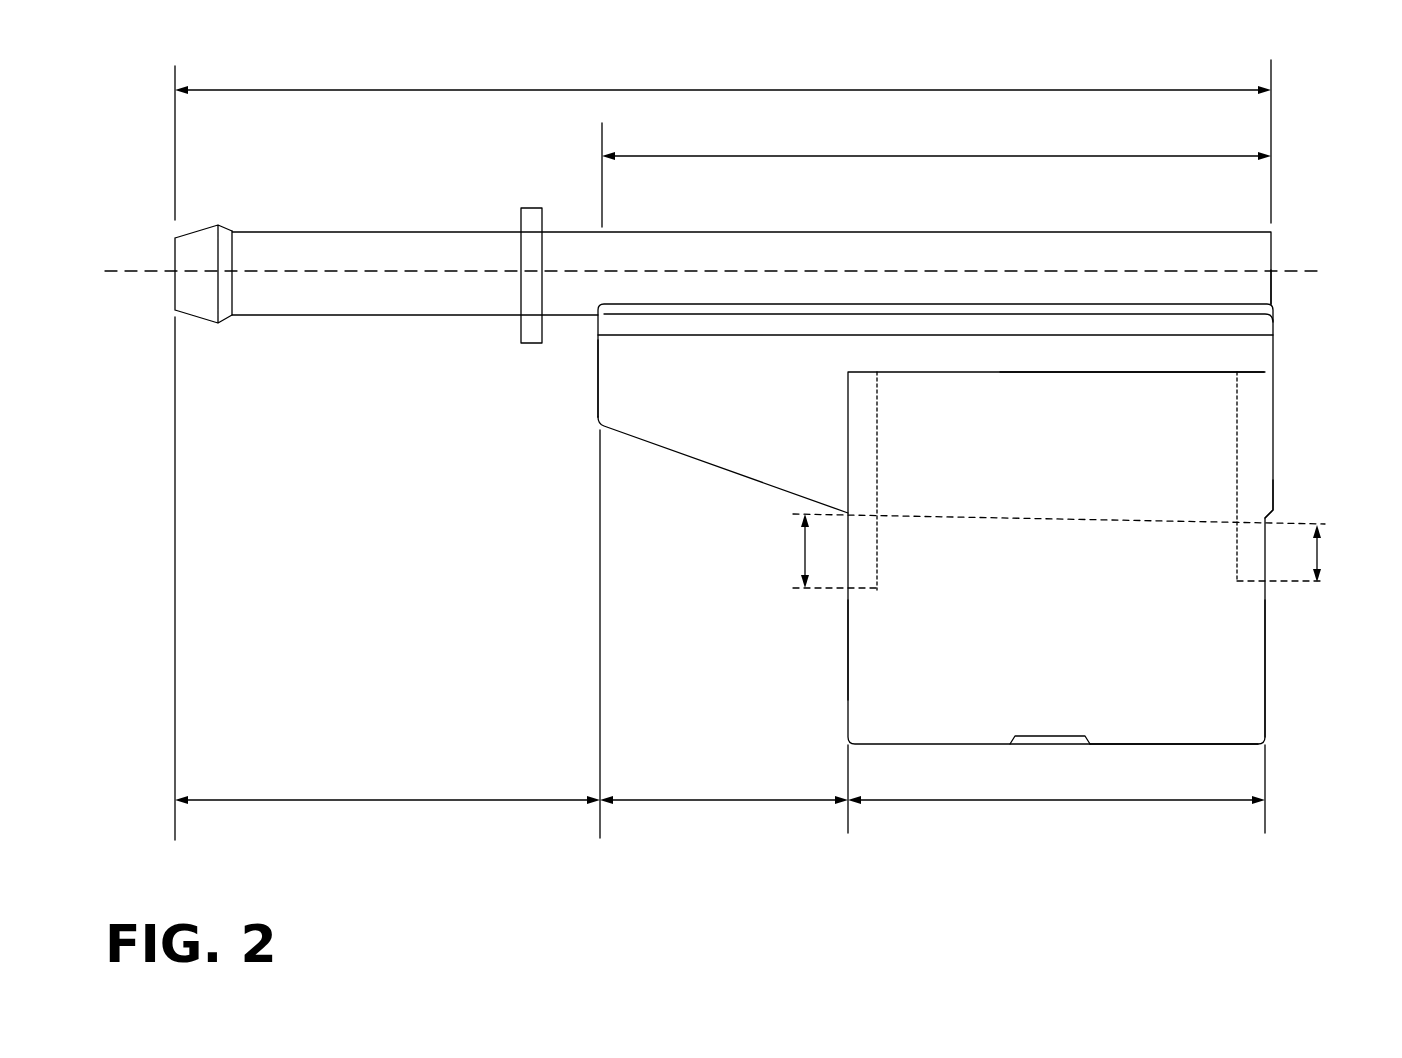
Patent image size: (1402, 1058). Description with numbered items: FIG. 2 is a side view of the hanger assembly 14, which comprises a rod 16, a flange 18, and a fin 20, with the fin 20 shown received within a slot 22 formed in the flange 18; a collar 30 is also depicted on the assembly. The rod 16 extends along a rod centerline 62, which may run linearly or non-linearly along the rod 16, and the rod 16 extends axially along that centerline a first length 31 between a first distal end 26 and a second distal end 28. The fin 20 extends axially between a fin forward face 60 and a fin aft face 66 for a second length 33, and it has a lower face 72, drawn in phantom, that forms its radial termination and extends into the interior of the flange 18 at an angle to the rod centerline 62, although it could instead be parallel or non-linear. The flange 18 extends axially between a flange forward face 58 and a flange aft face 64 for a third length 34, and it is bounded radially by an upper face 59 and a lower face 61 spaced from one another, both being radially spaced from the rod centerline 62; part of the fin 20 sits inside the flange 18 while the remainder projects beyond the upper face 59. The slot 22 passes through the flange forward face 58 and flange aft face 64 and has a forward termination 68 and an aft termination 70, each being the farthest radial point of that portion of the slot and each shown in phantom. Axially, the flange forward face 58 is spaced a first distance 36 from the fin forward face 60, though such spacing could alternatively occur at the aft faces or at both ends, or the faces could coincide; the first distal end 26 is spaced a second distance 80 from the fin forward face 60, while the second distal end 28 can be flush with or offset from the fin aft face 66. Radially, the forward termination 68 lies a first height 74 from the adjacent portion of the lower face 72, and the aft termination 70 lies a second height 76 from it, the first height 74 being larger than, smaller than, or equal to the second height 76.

The hanger assembly 14 is at (157, 128).
The rod 16 is at (320, 317).
The flange 18 is at (834, 629).
The fin 20 is at (732, 486).
The slot 22 is at (880, 485).
The first distal end 26 is at (172, 287).
The second distal end 28 is at (1273, 288).
The collar 30 is at (528, 345).
The first length 31 is at (675, 90).
The second length 33 is at (910, 156).
The third length 34 is at (1003, 802).
The first distance 36 is at (705, 802).
The flange forward face 58 is at (847, 648).
The upper face 59 is at (1208, 372).
The fin forward face 60 is at (598, 397).
The lower face 61 is at (1222, 745).
The rod centerline 62 is at (1296, 270).
The flange aft face 64 is at (1265, 700).
The fin aft face 66 is at (1274, 478).
The forward termination 68 is at (873, 595).
The aft termination 70 is at (1237, 590).
The lower face 72 is at (1080, 523).
The first height 74 is at (800, 548).
The second height 76 is at (1320, 554).
The second distance 80 is at (455, 802).